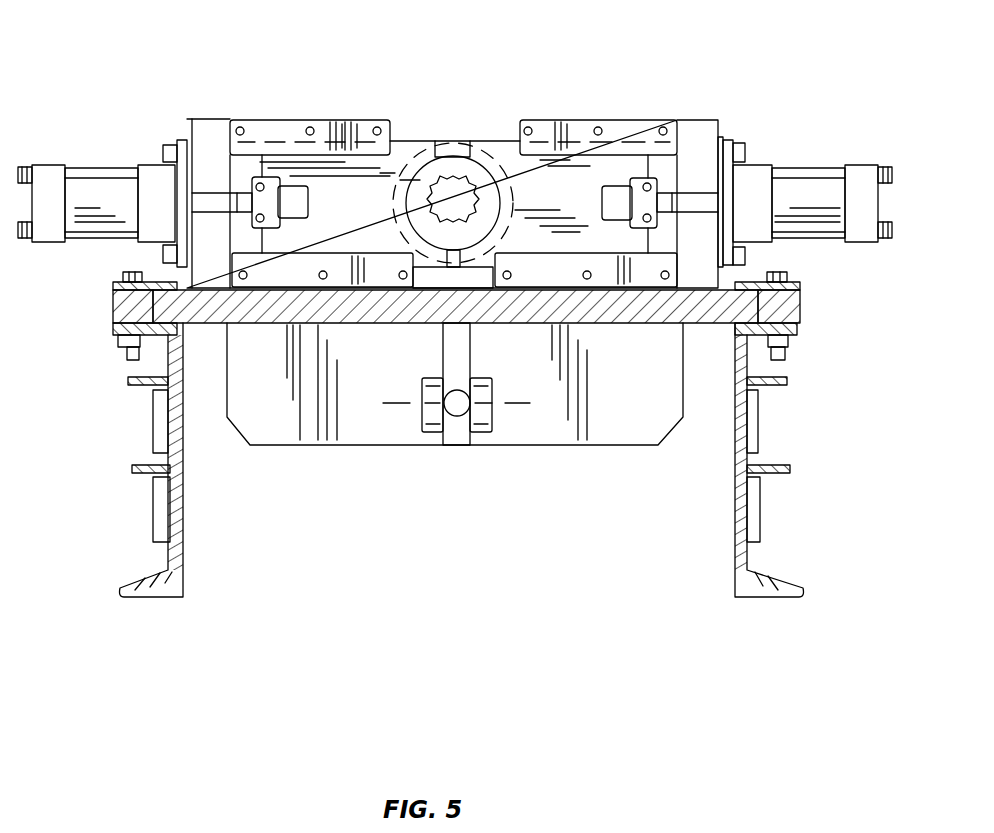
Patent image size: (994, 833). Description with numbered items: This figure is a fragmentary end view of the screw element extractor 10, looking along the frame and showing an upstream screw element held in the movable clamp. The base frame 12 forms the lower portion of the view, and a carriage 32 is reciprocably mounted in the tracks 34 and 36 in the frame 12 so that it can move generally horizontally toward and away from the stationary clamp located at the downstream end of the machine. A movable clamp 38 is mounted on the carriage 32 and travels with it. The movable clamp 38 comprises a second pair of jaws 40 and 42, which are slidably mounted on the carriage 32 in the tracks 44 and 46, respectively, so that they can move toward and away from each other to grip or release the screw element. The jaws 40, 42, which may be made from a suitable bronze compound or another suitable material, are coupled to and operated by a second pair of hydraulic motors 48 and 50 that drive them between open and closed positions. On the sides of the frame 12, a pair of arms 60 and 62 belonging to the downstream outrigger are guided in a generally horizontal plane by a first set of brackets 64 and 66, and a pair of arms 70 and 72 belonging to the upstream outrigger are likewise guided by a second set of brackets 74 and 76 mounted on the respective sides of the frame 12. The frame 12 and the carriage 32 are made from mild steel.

The screw element extractor 10 is at (668, 104).
The base frame 12 is at (735, 535).
The carriage 32 is at (372, 446).
The track 34 is at (112, 303).
The track 36 is at (797, 305).
The movable clamp 38 is at (345, 118).
The jaw 40 is at (394, 168).
The jaw 42 is at (540, 176).
The track 44 is at (270, 118).
The track 46 is at (626, 130).
The hydraulic motor 48 is at (98, 190).
The hydraulic motor 50 is at (803, 190).
The arm 60 is at (138, 383).
The arm 62 is at (785, 383).
The bracket 64 is at (153, 434).
The bracket 66 is at (760, 440).
The arm 70 is at (143, 476).
The arm 72 is at (782, 475).
The bracket 74 is at (157, 530).
The bracket 76 is at (760, 530).